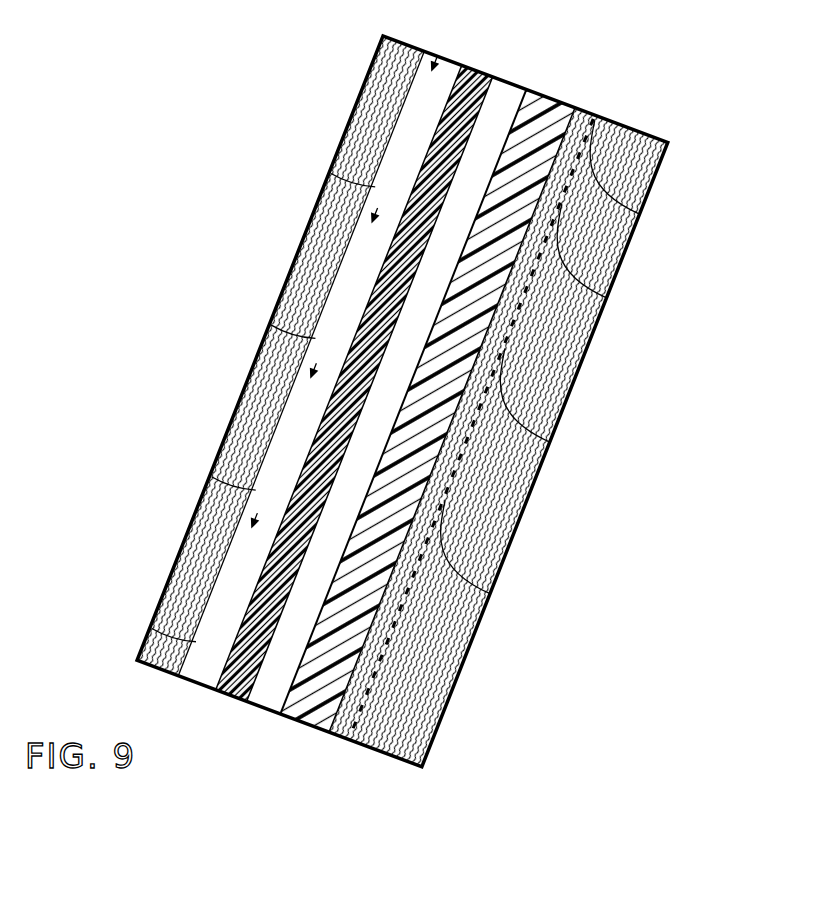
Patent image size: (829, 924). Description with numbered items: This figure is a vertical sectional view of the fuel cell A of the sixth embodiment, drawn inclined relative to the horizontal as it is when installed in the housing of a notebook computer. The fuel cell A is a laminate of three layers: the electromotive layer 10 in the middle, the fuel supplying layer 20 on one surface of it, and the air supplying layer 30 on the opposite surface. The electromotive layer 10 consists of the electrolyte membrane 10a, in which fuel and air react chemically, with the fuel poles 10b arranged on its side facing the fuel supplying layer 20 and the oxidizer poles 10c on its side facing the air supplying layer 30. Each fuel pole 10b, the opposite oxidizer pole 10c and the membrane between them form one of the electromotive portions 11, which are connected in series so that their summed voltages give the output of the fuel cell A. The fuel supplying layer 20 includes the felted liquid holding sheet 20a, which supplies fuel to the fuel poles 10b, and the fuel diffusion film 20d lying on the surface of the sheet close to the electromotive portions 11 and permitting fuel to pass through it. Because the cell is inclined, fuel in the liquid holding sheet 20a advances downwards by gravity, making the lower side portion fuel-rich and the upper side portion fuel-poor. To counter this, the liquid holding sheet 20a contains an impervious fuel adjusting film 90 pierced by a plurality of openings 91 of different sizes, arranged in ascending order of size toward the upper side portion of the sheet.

The fuel cell A is at (675, 150).
The electromotive layer 10 is at (319, 390).
The electrolyte membrane 10a is at (236, 694).
The fuel poles 10b is at (128, 523).
The oxidizer poles 10c is at (285, 377).
The electromotive portions 11 is at (295, 329).
The fuel supplying layer 20 is at (495, 424).
The liquid holding sheet 20a is at (452, 682).
The fuel diffusion film 20d is at (313, 722).
The air supplying layer 30 is at (284, 340).
The fuel adjusting film 90 is at (347, 119).
The openings 91 is at (564, 372).